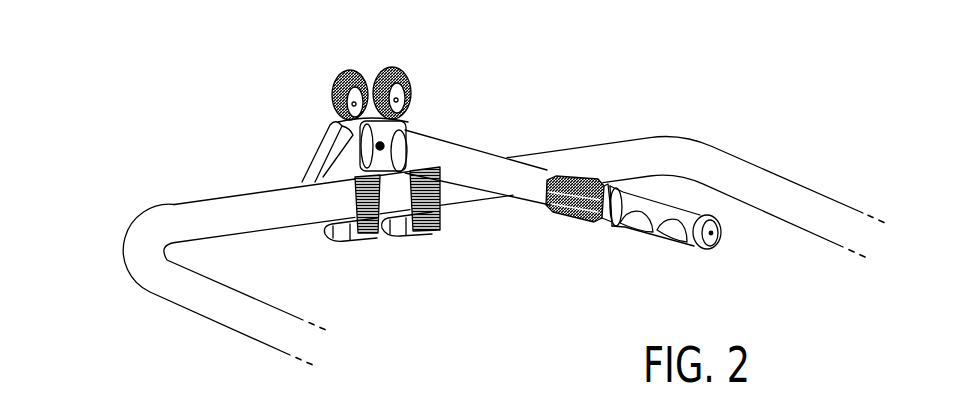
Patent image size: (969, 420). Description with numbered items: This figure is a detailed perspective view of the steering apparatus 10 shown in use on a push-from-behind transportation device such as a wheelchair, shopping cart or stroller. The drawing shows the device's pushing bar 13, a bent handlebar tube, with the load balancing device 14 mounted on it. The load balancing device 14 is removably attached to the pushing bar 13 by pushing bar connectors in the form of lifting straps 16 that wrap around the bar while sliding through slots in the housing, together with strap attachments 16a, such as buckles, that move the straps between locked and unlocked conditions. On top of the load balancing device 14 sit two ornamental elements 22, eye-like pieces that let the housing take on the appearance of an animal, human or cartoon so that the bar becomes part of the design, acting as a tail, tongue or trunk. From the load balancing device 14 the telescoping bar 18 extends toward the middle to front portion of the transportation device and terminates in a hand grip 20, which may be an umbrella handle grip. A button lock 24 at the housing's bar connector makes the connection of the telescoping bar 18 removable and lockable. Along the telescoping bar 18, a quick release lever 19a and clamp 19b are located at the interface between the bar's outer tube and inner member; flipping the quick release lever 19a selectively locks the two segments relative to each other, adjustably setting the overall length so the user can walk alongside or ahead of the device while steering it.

The steering apparatus 10 is at (734, 248).
The pushing bar 13 is at (180, 206).
The load balancing device 14 is at (331, 125).
The lifting strap 16 is at (355, 177).
The strap attachment 16a is at (407, 238).
The telescoping bar 18 is at (497, 154).
The quick release lever 19a is at (552, 205).
The clamp 19b is at (577, 178).
The hand grip 20 is at (645, 211).
The ornamental elements 22 is at (373, 72).
The button lock 24 is at (352, 148).